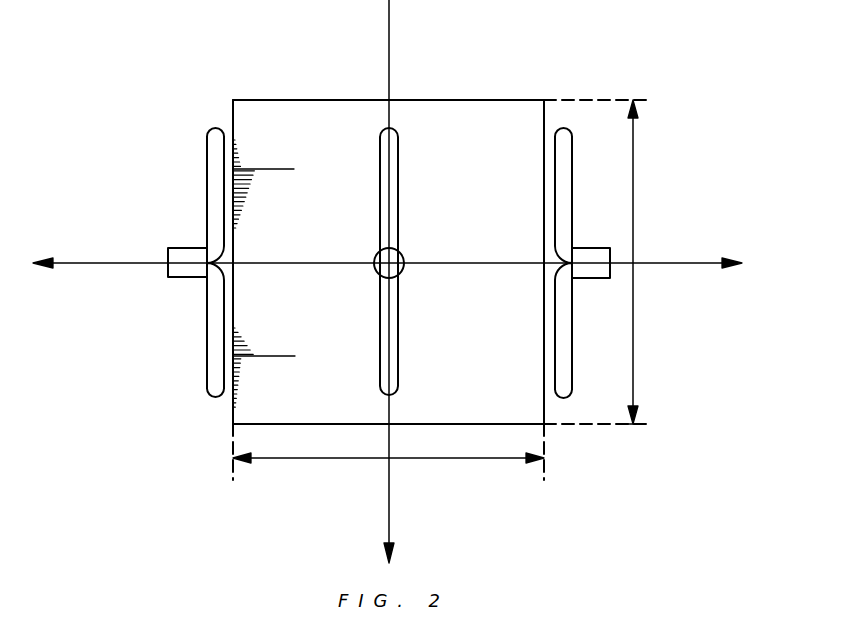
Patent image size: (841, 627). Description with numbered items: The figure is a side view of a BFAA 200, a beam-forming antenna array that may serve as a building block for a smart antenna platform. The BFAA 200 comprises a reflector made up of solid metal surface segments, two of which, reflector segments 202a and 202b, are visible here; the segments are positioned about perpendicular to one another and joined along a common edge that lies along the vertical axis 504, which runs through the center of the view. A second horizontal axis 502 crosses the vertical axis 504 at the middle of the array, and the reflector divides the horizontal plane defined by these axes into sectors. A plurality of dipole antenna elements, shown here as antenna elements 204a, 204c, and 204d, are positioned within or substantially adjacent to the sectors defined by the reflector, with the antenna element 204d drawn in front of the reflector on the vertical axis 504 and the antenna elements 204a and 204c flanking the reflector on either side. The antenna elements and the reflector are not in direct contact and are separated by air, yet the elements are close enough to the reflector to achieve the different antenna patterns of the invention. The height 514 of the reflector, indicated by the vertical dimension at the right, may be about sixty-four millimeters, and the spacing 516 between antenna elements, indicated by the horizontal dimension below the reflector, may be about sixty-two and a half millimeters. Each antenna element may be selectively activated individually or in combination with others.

The BFAA 200 is at (133, 74).
The reflector segment 202a is at (457, 113).
The reflector segment 202b is at (325, 118).
The antenna element 204a is at (568, 162).
The antenna element 204c is at (210, 176).
The antenna element 204d is at (390, 355).
The second horizontal axis 502 is at (665, 263).
The vertical axis 504 is at (390, 512).
The height 514 is at (633, 223).
The spacing 516 is at (330, 458).